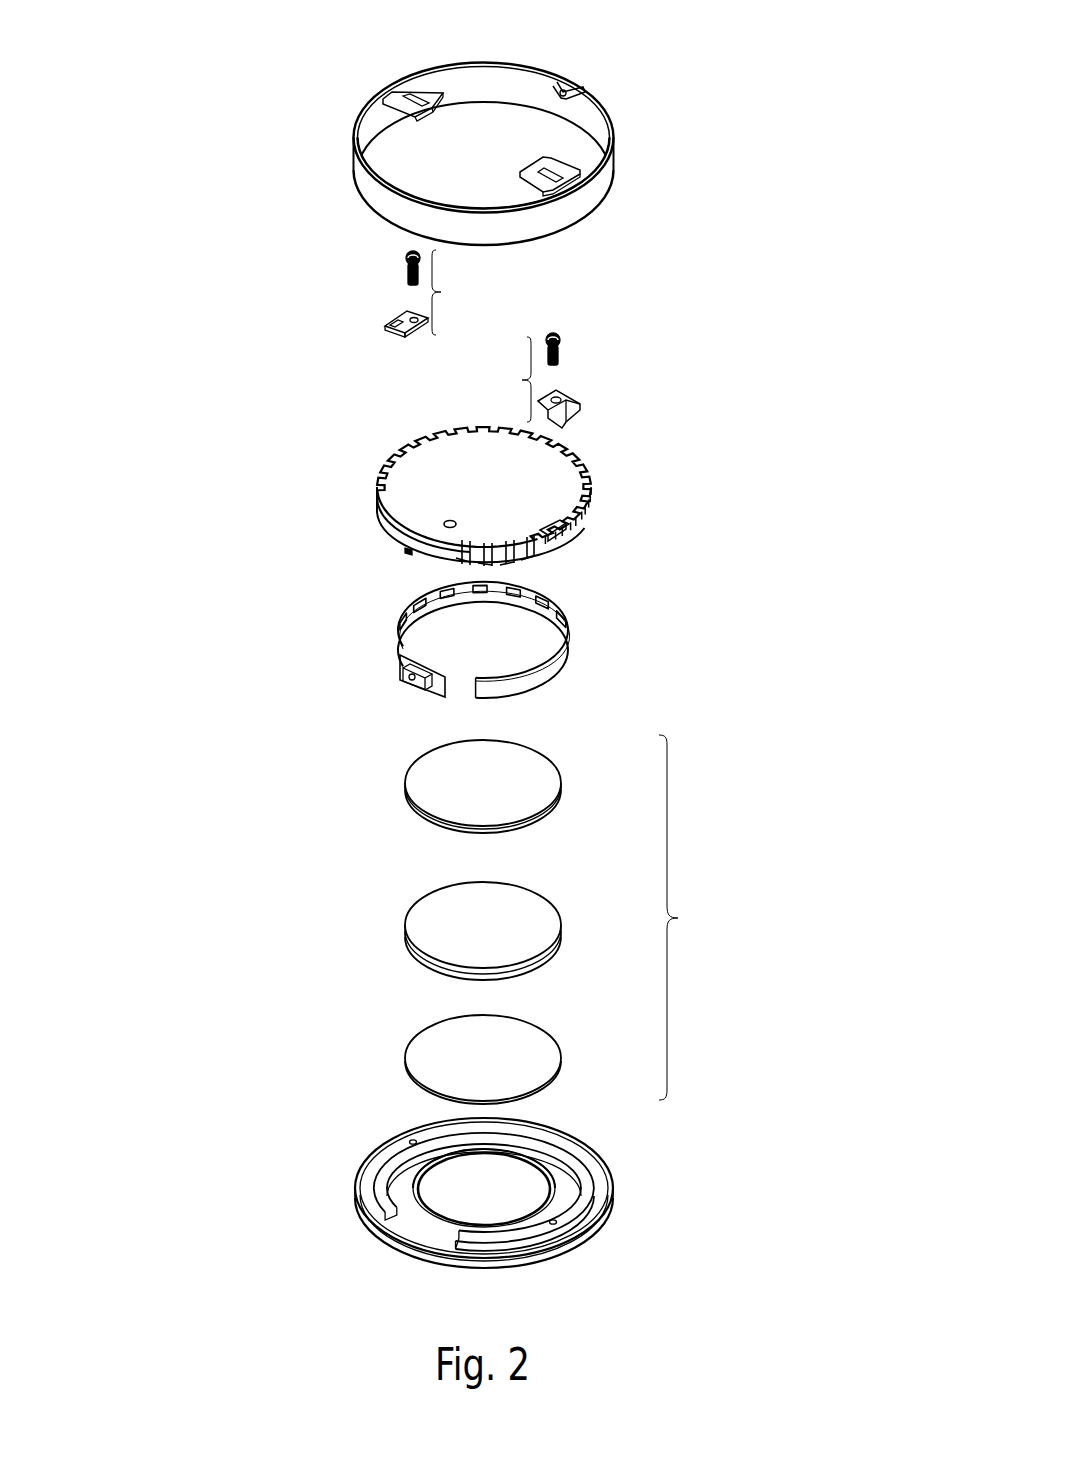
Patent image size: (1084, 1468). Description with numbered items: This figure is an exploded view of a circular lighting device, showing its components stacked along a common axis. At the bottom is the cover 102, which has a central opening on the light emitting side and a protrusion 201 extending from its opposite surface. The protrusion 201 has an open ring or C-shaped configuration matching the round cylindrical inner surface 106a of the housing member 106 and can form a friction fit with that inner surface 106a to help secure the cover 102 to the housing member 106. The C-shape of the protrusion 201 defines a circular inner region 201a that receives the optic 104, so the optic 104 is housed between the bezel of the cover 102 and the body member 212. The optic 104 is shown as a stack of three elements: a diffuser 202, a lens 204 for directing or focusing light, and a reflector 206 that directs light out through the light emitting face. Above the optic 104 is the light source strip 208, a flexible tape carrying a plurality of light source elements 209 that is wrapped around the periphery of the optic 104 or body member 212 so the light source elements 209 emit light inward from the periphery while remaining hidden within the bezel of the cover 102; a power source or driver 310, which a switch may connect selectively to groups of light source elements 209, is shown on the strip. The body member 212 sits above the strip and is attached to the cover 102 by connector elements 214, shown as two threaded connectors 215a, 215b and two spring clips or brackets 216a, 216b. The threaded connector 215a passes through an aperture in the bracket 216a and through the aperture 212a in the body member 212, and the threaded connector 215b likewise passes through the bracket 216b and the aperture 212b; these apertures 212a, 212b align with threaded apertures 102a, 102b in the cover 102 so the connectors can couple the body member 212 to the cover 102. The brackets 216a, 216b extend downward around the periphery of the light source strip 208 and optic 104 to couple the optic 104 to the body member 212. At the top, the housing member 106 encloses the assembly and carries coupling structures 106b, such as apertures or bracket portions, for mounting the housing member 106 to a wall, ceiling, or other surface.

The cover 102 is at (360, 1190).
The threaded aperture 102a is at (412, 1139).
The threaded aperture 102b is at (556, 1225).
The optic 104 is at (694, 917).
The housing member 106 is at (600, 114).
The inner surface 106a is at (488, 80).
The coupling structure 106b is at (420, 86).
The protrusion 201 is at (560, 1145).
The inner region 201a is at (558, 1178).
The diffuser 202 is at (560, 1040).
The lens 204 is at (410, 905).
The reflector 206 is at (555, 760).
The light source strip 208 is at (566, 610).
The light source elements 209 is at (438, 613).
The body member 212 is at (383, 462).
The aperture 212a is at (410, 428).
The aperture 212b is at (560, 540).
The connector elements 214 is at (481, 336).
The threaded connector 215a is at (406, 257).
The threaded connector 215b is at (562, 340).
The spring clip or bracket 216a is at (388, 317).
The spring clip or bracket 216b is at (575, 402).
The power source or driver 310 is at (405, 668).